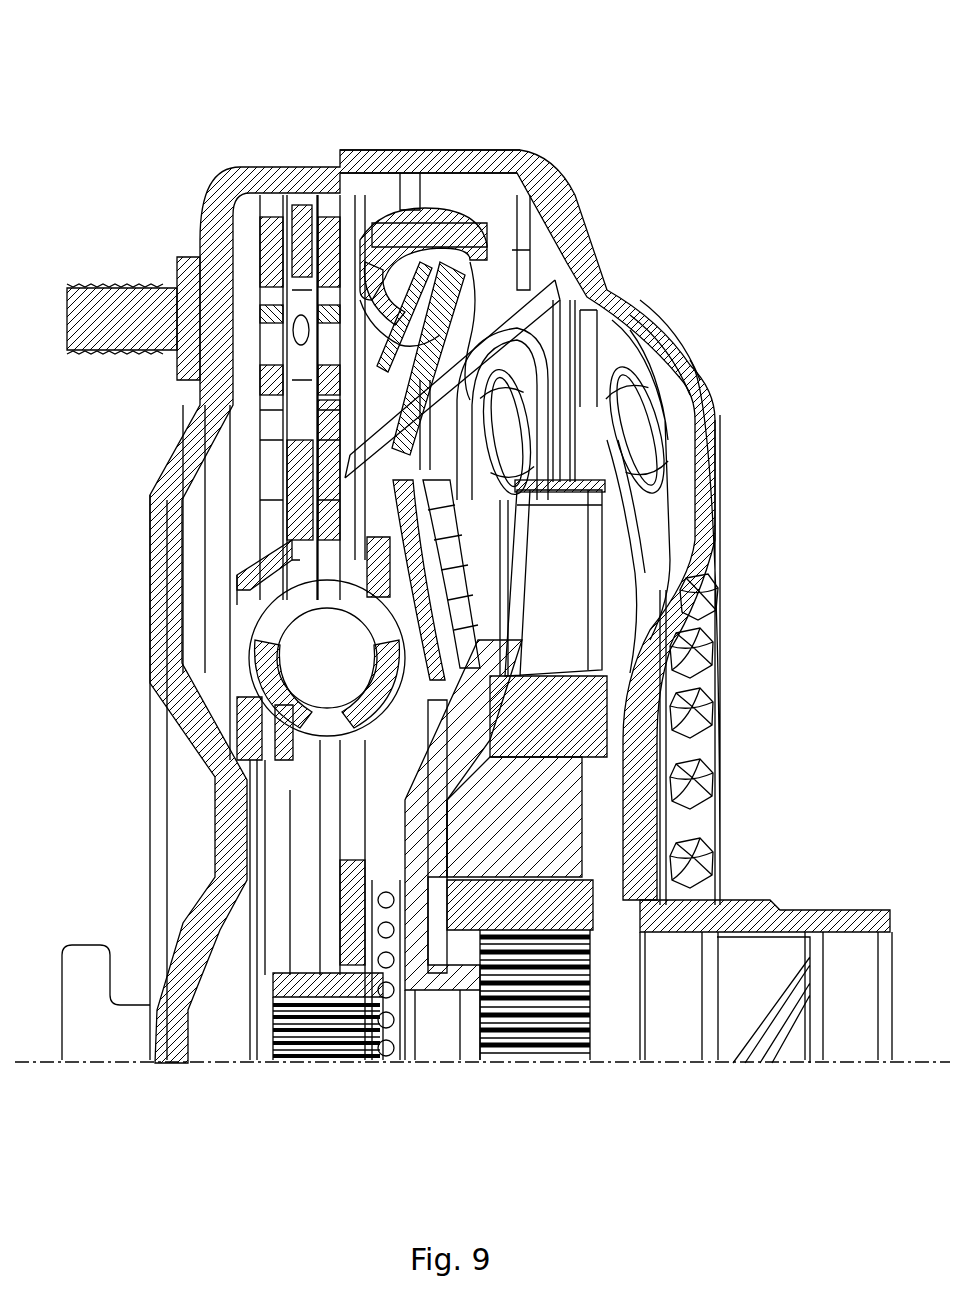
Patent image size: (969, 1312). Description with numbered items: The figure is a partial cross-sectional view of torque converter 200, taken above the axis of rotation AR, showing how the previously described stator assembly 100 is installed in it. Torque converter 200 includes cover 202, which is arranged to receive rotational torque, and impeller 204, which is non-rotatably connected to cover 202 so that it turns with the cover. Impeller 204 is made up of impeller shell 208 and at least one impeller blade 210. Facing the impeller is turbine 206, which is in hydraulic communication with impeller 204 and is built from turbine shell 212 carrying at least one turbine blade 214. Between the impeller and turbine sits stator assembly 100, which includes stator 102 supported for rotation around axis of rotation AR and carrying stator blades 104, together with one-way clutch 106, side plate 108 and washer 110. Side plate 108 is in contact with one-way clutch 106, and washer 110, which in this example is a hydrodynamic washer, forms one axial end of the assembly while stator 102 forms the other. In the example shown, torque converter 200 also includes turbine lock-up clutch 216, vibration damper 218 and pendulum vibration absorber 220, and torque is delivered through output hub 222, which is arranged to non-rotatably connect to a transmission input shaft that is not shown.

The torque converter 200 is at (735, 62).
The cover 202 is at (225, 190).
The impeller 204 is at (608, 282).
The turbine 206 is at (520, 280).
The impeller shell 208 is at (680, 350).
The impeller blade 210 is at (645, 425).
The turbine shell 212 is at (515, 198).
The turbine blade 214 is at (505, 358).
The turbine lock-up clutch 216 is at (565, 175).
The vibration damper 218 is at (242, 656).
The pendulum vibration absorber 220 is at (247, 264).
The output hub 222 is at (300, 1005).
The stator assembly 100 is at (650, 797).
The stator 102 is at (535, 672).
The stator blades 104 is at (555, 548).
The one-way clutch 106 is at (495, 831).
The side plate 108 is at (660, 880).
The washer 110 is at (665, 775).
The axis of rotation AR is at (762, 1062).